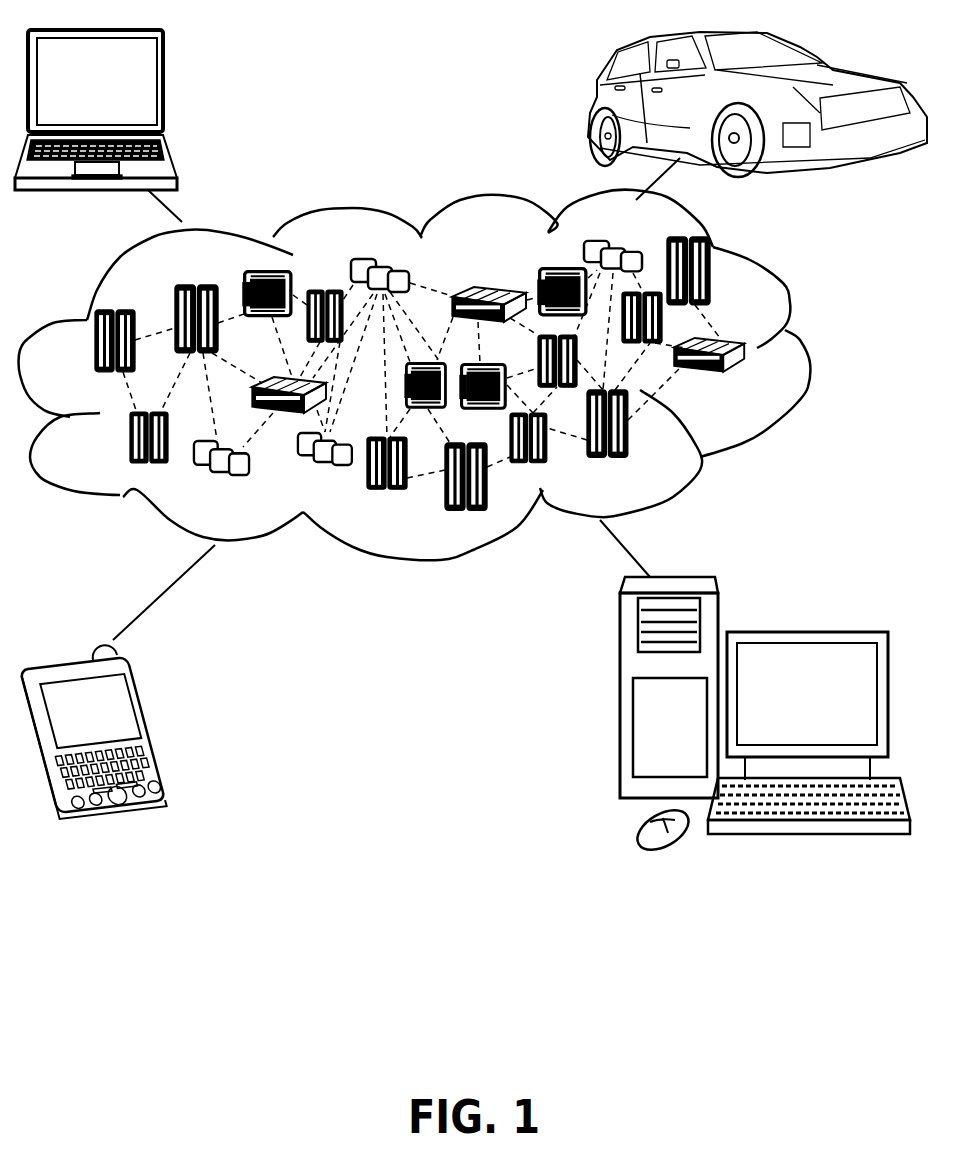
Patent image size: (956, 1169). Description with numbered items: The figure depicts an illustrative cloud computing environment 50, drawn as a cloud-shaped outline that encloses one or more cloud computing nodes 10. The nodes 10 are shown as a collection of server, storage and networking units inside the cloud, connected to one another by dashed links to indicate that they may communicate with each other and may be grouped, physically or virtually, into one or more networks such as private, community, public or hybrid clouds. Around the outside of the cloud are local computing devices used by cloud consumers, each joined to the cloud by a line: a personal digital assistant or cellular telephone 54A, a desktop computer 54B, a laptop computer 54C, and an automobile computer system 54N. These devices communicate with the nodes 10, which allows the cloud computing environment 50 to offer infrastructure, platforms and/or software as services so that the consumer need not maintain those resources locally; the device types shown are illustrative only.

The cloud computing nodes 10 is at (752, 384).
The cloud computing environment 50 is at (807, 353).
The personal digital assistant or cellular telephone 54A is at (150, 725).
The desktop computer 54B is at (803, 632).
The laptop computer 54C is at (167, 90).
The automobile computer system 54N is at (592, 102).